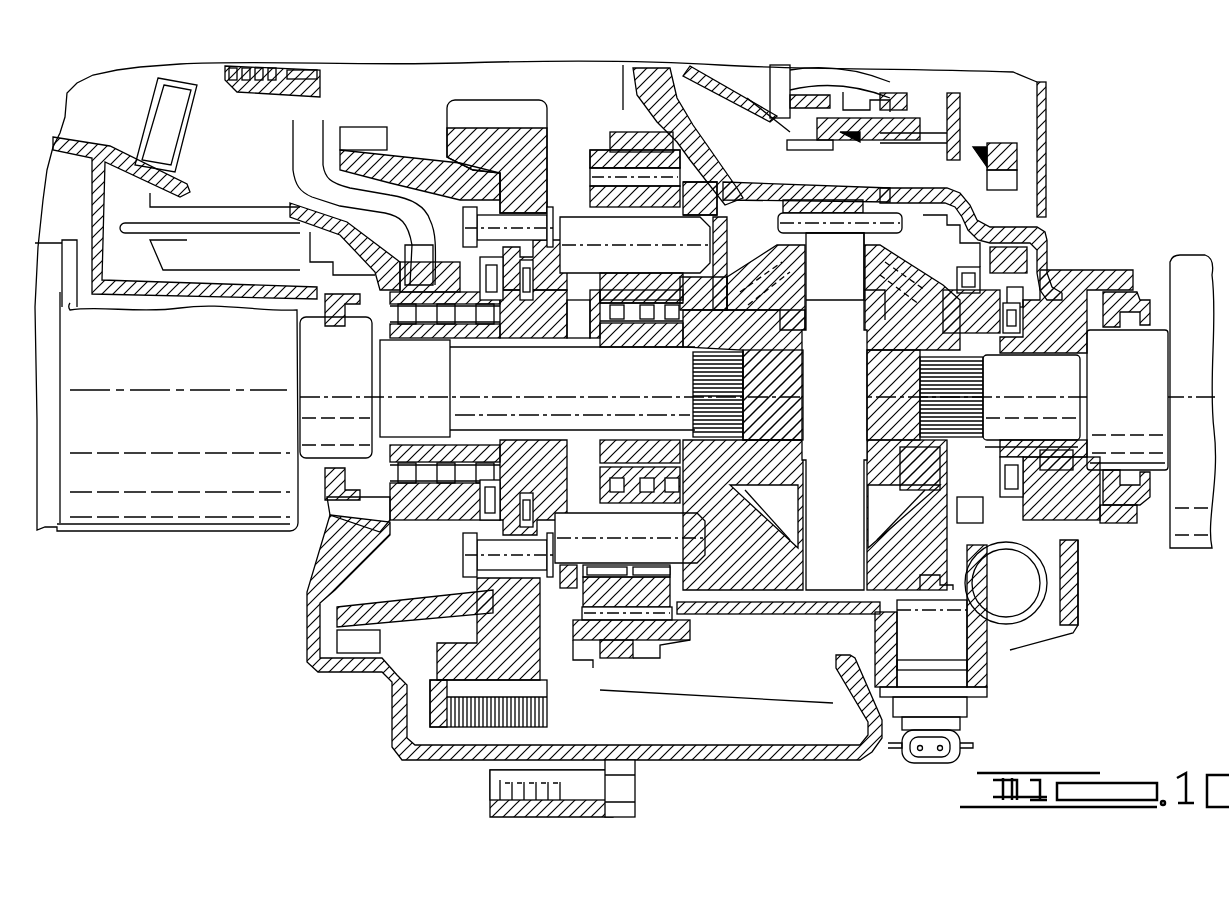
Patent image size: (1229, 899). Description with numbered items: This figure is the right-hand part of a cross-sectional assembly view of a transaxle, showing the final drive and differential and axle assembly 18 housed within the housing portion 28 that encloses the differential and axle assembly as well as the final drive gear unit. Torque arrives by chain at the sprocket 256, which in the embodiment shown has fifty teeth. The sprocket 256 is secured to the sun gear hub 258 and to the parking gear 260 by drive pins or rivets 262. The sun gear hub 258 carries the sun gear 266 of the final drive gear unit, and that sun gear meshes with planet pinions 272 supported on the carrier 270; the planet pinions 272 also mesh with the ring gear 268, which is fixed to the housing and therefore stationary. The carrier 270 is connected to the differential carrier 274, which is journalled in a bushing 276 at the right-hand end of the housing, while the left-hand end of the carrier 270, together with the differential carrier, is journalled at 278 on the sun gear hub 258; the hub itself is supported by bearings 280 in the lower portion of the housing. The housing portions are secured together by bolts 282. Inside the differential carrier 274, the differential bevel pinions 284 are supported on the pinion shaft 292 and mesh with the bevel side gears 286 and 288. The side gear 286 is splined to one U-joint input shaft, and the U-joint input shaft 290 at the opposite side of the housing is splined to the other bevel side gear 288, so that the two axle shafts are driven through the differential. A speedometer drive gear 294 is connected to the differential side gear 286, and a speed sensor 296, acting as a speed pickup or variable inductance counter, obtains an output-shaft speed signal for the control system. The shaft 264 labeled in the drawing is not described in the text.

The final drive and differential and axle assembly 18 is at (875, 212).
The housing portion 28 is at (817, 753).
The sprocket 256 is at (528, 120).
The sun gear hub 258 is at (527, 327).
The parking gear 260 is at (393, 167).
The drive pins or rivets 262 is at (530, 213).
The input shaft 264 is at (653, 307).
The sun gear 266 is at (622, 336).
The ring gear 268 is at (687, 155).
The carrier 270 is at (727, 187).
The planet pinions 272 is at (697, 180).
The differential carrier 274 is at (873, 275).
The bushing 276 is at (1077, 278).
The journal 278 is at (553, 303).
The bearings 280 is at (425, 325).
The bolts 282 is at (640, 786).
The differential bevel pinions 284 is at (880, 288).
The bevel side gear 286 is at (890, 355).
The bevel side gear 288 is at (745, 357).
The U-joint input shaft 290 is at (572, 405).
The pinion shaft 292 is at (848, 415).
The speedometer drive gear 294 is at (985, 272).
The speed sensor 296 is at (948, 640).